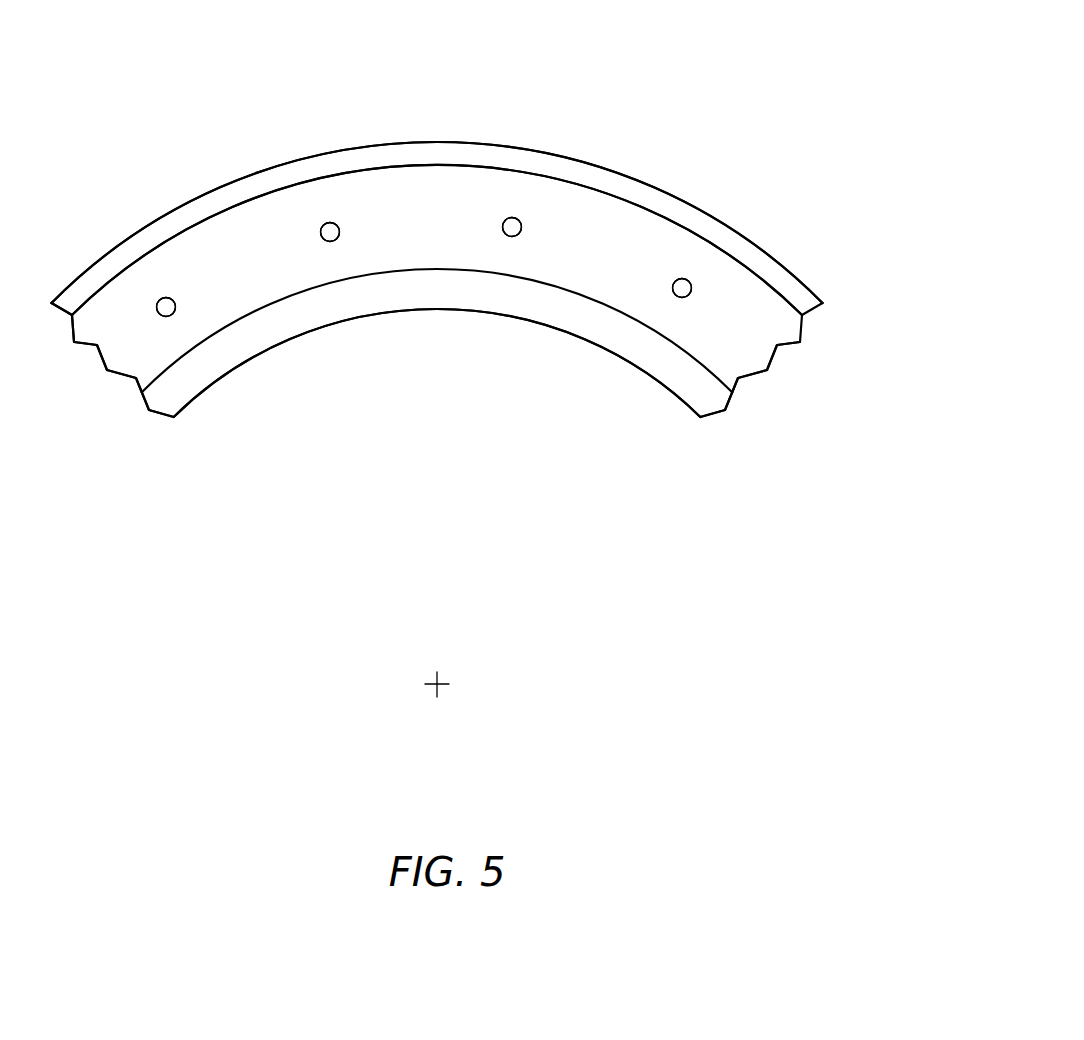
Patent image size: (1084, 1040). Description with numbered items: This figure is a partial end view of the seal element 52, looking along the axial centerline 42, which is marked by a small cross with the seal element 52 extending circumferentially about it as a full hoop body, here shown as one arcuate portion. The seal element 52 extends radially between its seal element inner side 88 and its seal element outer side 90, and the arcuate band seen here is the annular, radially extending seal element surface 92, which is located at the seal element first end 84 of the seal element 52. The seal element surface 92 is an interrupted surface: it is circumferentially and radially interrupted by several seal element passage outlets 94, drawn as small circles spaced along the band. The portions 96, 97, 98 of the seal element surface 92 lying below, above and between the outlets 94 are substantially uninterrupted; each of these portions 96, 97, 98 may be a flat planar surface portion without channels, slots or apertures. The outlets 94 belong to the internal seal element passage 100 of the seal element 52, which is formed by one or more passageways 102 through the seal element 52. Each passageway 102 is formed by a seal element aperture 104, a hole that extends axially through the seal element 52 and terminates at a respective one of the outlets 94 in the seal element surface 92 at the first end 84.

The axial centerline 42 is at (441, 682).
The seal element 52 is at (703, 95).
The seal element first end 84 is at (100, 330).
The seal element inner side 88 is at (428, 312).
The seal element outer side 90 is at (376, 141).
The seal element surface 92 is at (138, 365).
The seal element passage outlets 94 is at (176, 307).
The seal element surface portion 96 is at (770, 380).
The seal element surface portion 97 is at (808, 338).
The seal element surface portion 98 is at (426, 213).
The seal element passage 100 is at (487, 273).
The passageway 102 is at (515, 217).
The seal element aperture 104 is at (331, 223).